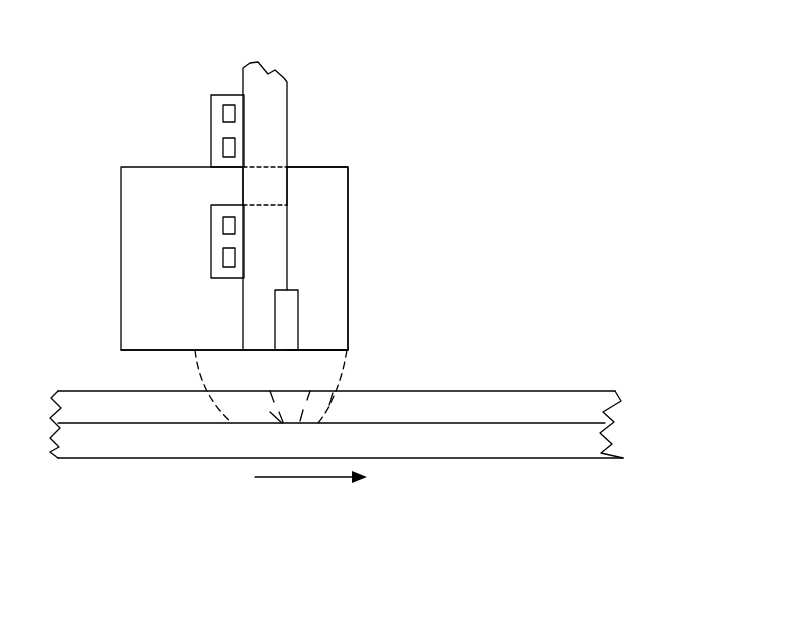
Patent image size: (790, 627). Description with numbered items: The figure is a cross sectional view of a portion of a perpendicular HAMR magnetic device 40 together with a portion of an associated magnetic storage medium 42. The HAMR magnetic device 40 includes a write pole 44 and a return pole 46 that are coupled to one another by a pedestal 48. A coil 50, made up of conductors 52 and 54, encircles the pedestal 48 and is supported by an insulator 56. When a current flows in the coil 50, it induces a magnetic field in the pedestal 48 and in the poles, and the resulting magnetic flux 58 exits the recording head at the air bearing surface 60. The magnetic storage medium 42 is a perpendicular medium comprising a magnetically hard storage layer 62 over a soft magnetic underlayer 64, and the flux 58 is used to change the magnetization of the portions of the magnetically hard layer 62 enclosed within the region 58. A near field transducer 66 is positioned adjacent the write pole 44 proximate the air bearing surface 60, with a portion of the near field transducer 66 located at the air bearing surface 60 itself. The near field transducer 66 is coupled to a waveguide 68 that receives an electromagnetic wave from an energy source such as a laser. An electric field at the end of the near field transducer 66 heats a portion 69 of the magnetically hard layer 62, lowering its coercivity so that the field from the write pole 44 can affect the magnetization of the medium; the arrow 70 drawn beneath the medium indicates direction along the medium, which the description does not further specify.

The HAMR magnetic device 40 is at (446, 90).
The magnetic storage medium 42 is at (624, 360).
The write pole 44 is at (327, 210).
The return pole 46 is at (145, 290).
The pedestal 48 is at (276, 184).
The coil 50 is at (197, 80).
The conductor 52 is at (218, 256).
The conductor 54 is at (218, 144).
The insulator 56 is at (217, 100).
The magnetic flux 58 is at (343, 378).
The air bearing surface 60 is at (138, 352).
The magnetically hard storage layer 62 is at (575, 412).
The soft magnetic underlayer 64 is at (568, 435).
The near field transducer 66 is at (290, 312).
The waveguide 68 is at (262, 132).
The heated portion 69 is at (272, 413).
The travel direction 70 is at (308, 480).